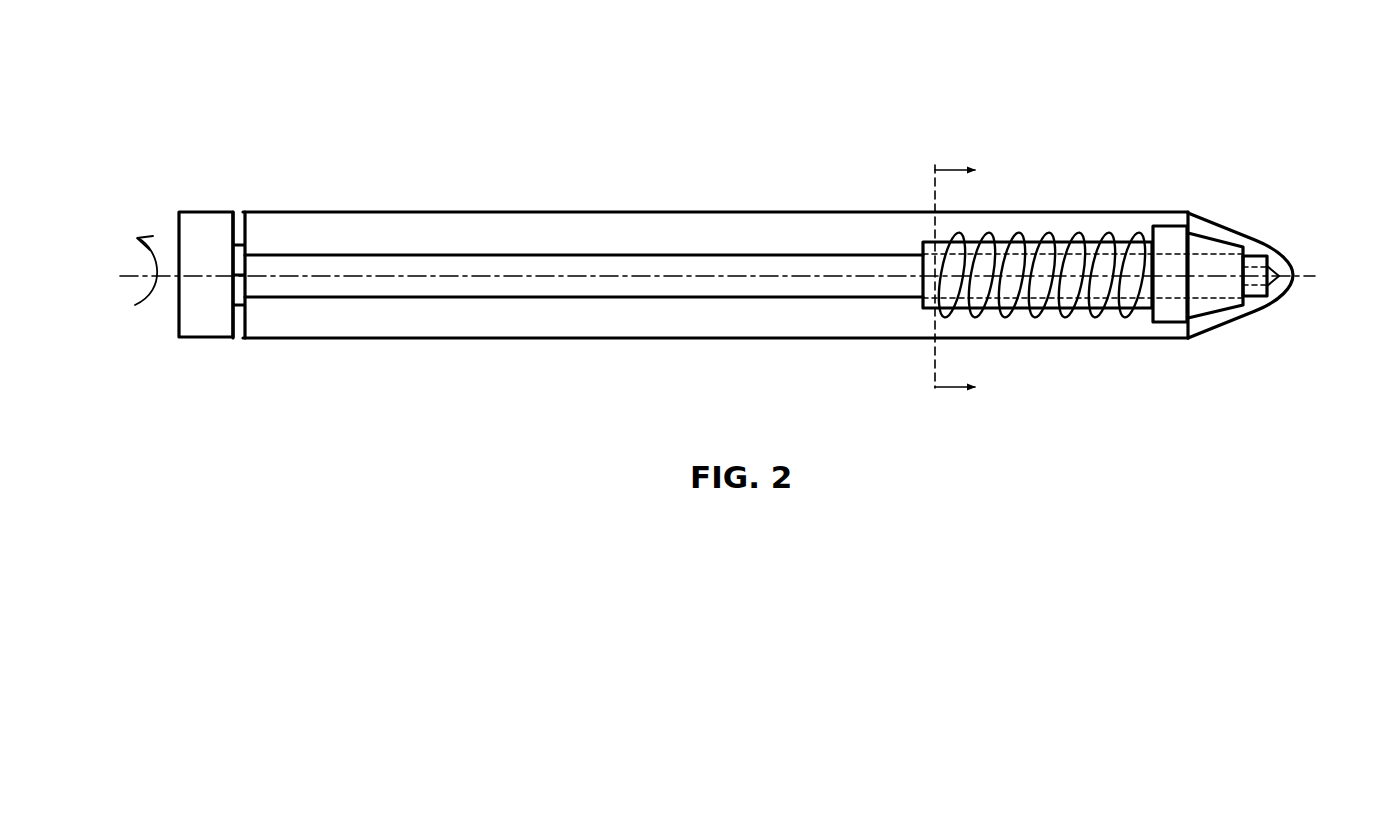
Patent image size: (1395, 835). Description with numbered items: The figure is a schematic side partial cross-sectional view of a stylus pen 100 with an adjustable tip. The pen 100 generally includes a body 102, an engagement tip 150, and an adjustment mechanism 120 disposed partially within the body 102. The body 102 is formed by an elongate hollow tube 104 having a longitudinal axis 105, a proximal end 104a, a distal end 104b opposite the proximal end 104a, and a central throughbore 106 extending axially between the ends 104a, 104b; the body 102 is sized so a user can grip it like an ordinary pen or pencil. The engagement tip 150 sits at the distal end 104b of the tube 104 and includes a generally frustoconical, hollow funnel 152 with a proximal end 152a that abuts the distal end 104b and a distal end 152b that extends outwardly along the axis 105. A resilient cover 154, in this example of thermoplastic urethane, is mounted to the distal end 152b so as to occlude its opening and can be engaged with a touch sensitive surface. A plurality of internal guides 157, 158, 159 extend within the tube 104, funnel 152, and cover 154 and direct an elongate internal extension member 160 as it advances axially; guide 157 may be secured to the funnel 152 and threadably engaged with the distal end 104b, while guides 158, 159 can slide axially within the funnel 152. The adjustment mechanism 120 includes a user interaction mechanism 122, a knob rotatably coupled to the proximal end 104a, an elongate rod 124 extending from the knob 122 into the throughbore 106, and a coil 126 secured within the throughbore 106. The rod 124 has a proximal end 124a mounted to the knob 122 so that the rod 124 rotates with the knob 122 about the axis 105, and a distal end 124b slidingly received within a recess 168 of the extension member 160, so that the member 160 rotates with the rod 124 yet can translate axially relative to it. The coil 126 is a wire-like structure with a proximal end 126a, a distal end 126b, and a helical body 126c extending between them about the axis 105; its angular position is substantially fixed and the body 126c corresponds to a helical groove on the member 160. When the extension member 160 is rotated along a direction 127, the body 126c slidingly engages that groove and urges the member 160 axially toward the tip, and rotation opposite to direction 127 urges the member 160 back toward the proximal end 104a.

The stylus pen 100 is at (507, 72).
The body 102 is at (621, 209).
The tube 104 is at (742, 212).
The proximal end 104a is at (243, 339).
The distal end 104b is at (1188, 330).
The longitudinal axis 105 is at (430, 277).
The central throughbore 106 is at (353, 236).
The adjustment mechanism 120 is at (521, 313).
The user interaction mechanism 122 is at (211, 207).
The elongate rod 124 is at (503, 254).
The proximal end 124a is at (252, 302).
The distal end 124b is at (1043, 320).
The coil 126 is at (1027, 291).
The proximal end 126a is at (948, 242).
The distal end 126b is at (1143, 243).
The body 126c is at (1044, 255).
The direction 127 is at (150, 306).
The engagement tip 150 is at (1229, 218).
The funnel 152 is at (1238, 318).
The proximal end 152a is at (1210, 185).
The distal end 152b is at (1278, 235).
The resilient cover 154 is at (1288, 258).
The guide 157 is at (1173, 324).
The guide 158 is at (1218, 325).
The guide 159 is at (1262, 298).
The extension member 160 is at (1143, 306).
The recess 168 is at (988, 262).